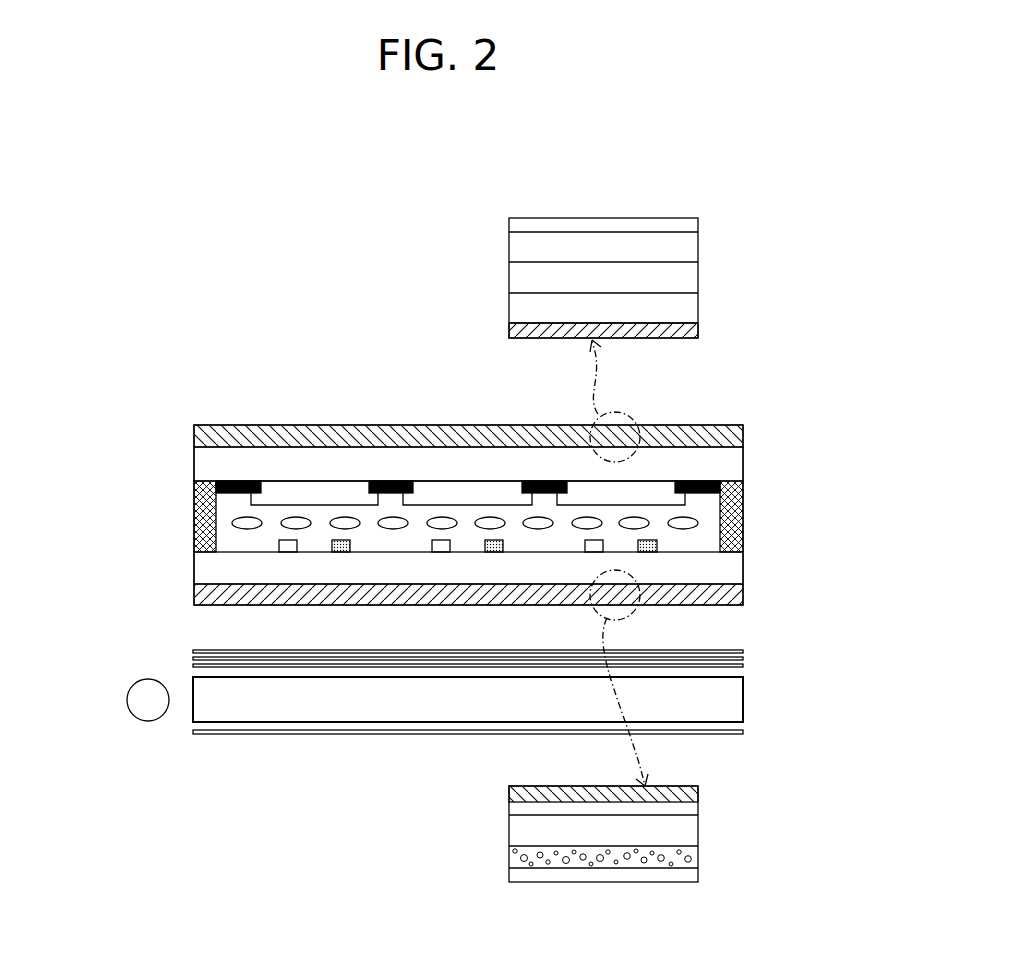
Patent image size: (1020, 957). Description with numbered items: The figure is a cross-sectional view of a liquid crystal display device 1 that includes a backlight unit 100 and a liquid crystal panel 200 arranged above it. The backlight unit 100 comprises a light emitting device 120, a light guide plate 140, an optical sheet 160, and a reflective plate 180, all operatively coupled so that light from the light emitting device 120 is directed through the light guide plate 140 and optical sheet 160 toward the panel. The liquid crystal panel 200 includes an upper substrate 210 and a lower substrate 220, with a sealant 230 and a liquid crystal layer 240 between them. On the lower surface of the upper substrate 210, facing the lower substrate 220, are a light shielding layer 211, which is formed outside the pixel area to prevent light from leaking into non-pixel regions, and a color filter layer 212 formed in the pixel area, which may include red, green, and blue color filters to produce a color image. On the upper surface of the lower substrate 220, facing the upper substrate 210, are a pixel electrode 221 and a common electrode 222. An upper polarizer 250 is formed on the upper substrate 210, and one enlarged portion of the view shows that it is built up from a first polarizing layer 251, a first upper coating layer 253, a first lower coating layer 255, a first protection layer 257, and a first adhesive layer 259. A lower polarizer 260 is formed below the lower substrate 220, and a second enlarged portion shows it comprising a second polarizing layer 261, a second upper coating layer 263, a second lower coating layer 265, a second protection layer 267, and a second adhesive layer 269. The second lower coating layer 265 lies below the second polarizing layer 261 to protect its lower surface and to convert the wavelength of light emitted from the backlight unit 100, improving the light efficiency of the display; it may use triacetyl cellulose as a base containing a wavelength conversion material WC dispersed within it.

The liquid crystal display device 1 is at (168, 362).
The backlight unit 100 is at (310, 796).
The light emitting device 120 is at (132, 721).
The light guide plate 140 is at (230, 700).
The optical sheet 160 is at (277, 658).
The reflective plate 180 is at (313, 735).
The liquid crystal panel 200 is at (120, 435).
The upper substrate 210 is at (215, 465).
The light shielding layer 211 is at (230, 482).
The color filter layer 212 is at (343, 492).
The lower substrate 220 is at (215, 568).
The pixel electrode 221 is at (442, 540).
The common electrode 222 is at (493, 540).
The sealant 230 is at (200, 505).
The liquid crystal layer 240 is at (240, 527).
The upper polarizer 250 is at (215, 437).
The first polarizing layer 251 is at (685, 276).
The first upper coating layer 253 is at (685, 246).
The first lower coating layer 255 is at (685, 308).
The first protection layer 257 is at (685, 224).
The first adhesive layer 259 is at (685, 331).
The lower polarizer 260 is at (210, 597).
The second polarizing layer 261 is at (685, 836).
The second upper coating layer 263 is at (685, 815).
The second lower coating layer 265 is at (685, 860).
The second protection layer 267 is at (685, 883).
The second adhesive layer 269 is at (685, 793).
The wavelength conversion material WC is at (599, 862).